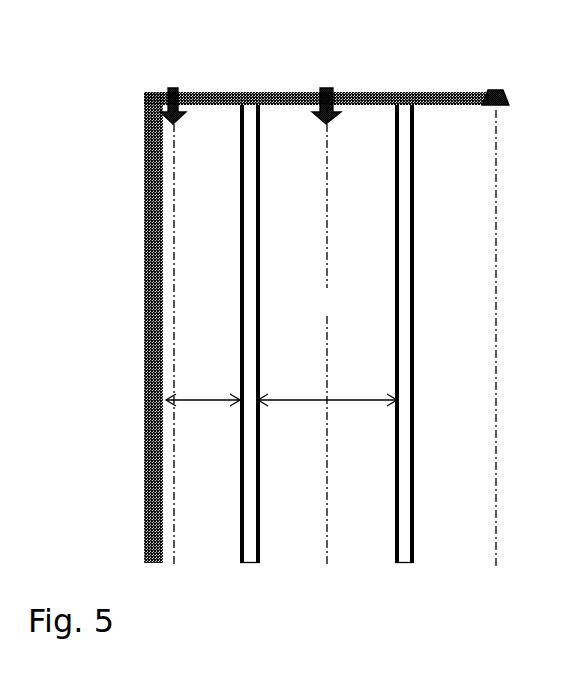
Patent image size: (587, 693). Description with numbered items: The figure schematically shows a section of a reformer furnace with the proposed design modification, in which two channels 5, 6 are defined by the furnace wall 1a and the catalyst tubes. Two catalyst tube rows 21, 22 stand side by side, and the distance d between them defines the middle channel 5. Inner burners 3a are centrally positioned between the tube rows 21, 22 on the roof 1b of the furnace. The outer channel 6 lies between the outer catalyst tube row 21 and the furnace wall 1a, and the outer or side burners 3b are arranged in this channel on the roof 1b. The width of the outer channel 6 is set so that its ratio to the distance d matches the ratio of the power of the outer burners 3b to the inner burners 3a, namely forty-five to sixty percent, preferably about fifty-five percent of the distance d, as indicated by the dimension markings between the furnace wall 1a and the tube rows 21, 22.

The furnace wall 1a is at (153, 252).
The roof 1b is at (445, 97).
The catalyst tube row 21 is at (250, 553).
The catalyst tube row 22 is at (403, 548).
The inner burners 3a is at (335, 103).
The outer or side burners 3b is at (183, 103).
The middle channel 5 is at (341, 503).
The outer channel 6 is at (205, 463).